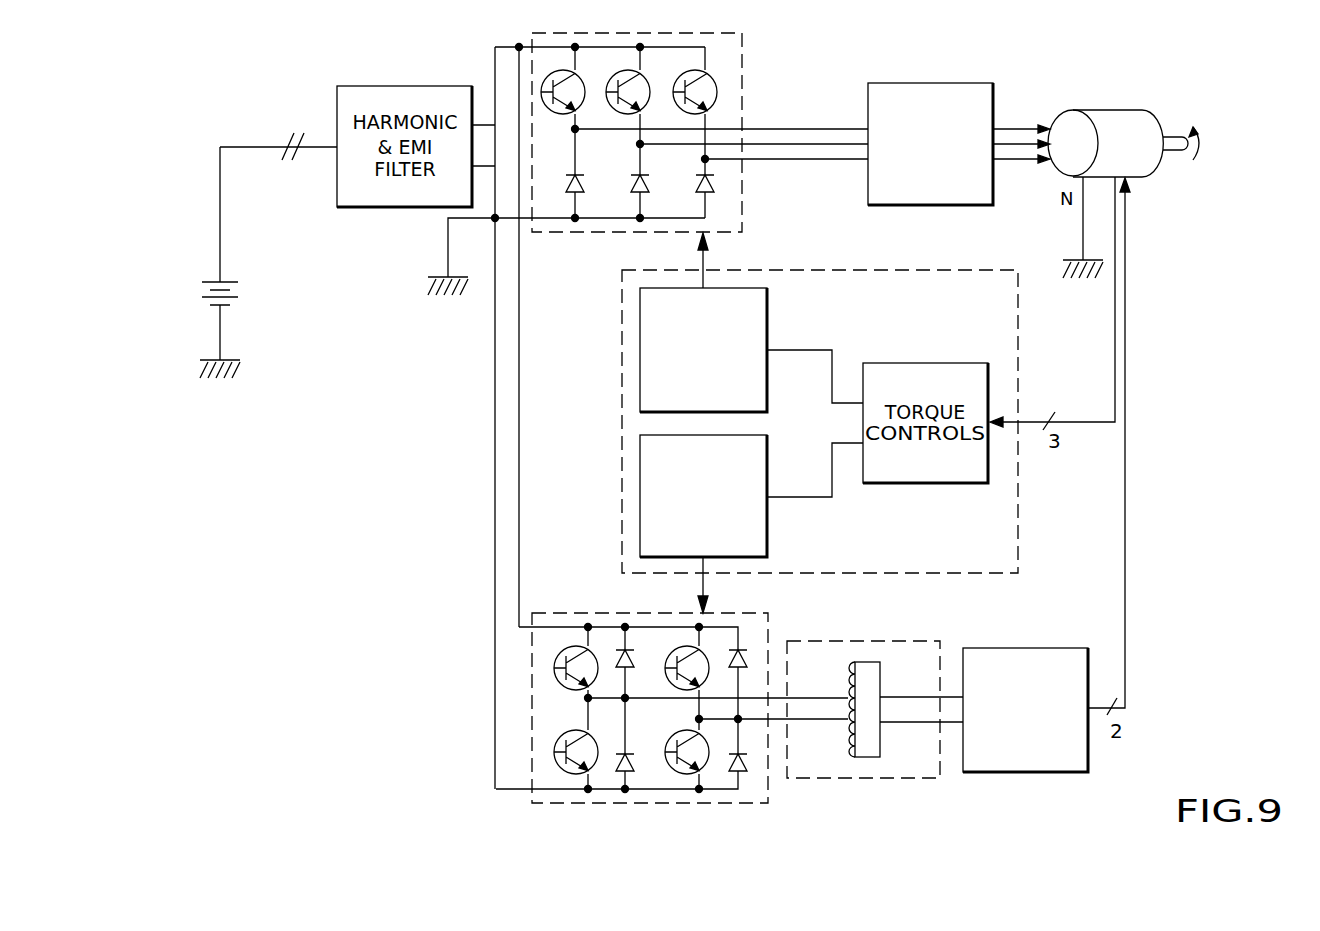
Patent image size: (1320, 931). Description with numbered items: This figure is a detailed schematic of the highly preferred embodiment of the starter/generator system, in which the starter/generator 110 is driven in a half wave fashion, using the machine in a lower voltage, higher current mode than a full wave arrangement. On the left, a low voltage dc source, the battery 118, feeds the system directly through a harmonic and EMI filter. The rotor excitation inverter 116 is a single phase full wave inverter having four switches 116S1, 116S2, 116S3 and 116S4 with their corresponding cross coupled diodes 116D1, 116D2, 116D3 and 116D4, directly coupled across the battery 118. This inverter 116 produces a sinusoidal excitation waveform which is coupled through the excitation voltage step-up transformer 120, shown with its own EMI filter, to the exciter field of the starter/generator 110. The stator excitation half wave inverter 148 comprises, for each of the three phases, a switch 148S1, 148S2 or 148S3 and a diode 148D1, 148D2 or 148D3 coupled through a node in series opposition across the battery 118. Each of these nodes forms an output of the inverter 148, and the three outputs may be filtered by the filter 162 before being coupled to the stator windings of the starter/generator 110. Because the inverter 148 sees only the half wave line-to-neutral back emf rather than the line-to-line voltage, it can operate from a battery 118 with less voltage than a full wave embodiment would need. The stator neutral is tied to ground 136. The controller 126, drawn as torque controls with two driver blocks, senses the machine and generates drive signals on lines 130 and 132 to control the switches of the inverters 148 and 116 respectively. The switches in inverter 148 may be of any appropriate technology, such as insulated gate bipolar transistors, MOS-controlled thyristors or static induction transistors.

The starter/generator 110 is at (1142, 120).
The rotor excitation inverter 116 is at (767, 777).
The switch of rotor excitation inverter 116S1 is at (578, 668).
The switch of rotor excitation inverter 116S2 is at (578, 760).
The switch of rotor excitation inverter 116S3 is at (700, 668).
The switch of rotor excitation inverter 116S4 is at (700, 770).
The cross coupled diode 116D1 is at (625, 655).
The cross coupled diode 116D2 is at (625, 770).
The cross coupled diode 116D3 is at (740, 663).
The cross coupled diode 116D4 is at (740, 770).
The battery 118 is at (210, 282).
The excitation voltage step-up transformer 120 is at (930, 767).
The controller 126 is at (932, 280).
The drive signal line 130 is at (703, 262).
The drive signal line 132 is at (703, 590).
The ground 136 is at (1090, 263).
The half wave inverter 148 is at (728, 175).
The switch of half wave inverter 148S1 is at (550, 83).
The switch of half wave inverter 148S2 is at (638, 83).
The switch of half wave inverter 148S3 is at (707, 88).
The diode of half wave inverter 148D1 is at (565, 190).
The diode of half wave inverter 148D2 is at (633, 190).
The diode of half wave inverter 148D3 is at (708, 193).
The filter 162 is at (978, 95).